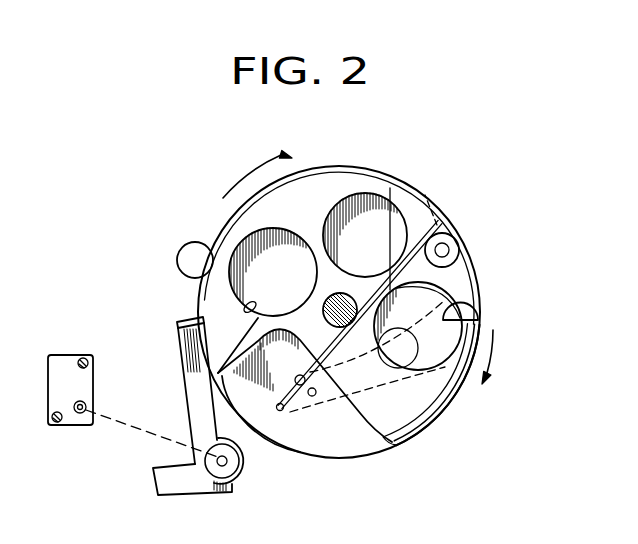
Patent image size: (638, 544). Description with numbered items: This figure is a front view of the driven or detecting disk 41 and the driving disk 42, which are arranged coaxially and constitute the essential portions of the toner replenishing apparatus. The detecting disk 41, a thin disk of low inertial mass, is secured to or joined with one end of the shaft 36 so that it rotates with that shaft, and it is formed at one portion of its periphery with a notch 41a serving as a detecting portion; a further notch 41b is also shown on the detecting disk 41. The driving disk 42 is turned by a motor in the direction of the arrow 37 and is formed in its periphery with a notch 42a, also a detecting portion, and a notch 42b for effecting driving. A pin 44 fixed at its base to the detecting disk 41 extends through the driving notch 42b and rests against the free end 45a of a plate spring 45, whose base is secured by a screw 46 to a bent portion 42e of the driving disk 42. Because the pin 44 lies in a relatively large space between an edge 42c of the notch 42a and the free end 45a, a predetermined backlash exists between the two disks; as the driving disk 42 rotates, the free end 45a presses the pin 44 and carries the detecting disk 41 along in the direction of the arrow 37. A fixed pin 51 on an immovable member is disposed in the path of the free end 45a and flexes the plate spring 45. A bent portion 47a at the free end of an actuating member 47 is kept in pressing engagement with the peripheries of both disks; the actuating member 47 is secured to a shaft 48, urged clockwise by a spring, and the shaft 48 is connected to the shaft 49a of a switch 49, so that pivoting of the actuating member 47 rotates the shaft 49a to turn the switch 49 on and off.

The shaft 36 is at (330, 303).
The arrow 37 is at (249, 174).
The detecting disk 41 is at (441, 405).
The notch 41a is at (260, 393).
The disc cutout 41b is at (305, 385).
The driving disk 42 is at (385, 440).
The notch 42a is at (240, 330).
The notch 42b is at (454, 296).
The edge 42c is at (478, 320).
The bent portion 42e is at (297, 412).
The pin 44 is at (452, 240).
The plate spring 45 is at (360, 318).
The free end 45a is at (442, 198).
The screw 46 is at (327, 393).
The actuating member 47 is at (178, 361).
The bent portion 47a is at (177, 321).
The shaft 48 is at (221, 486).
The switch 49 is at (72, 360).
The shaft 49a is at (85, 414).
The fixed pin 51 is at (191, 243).